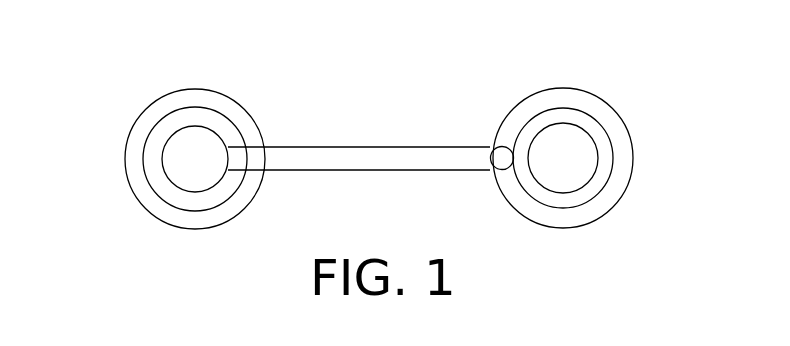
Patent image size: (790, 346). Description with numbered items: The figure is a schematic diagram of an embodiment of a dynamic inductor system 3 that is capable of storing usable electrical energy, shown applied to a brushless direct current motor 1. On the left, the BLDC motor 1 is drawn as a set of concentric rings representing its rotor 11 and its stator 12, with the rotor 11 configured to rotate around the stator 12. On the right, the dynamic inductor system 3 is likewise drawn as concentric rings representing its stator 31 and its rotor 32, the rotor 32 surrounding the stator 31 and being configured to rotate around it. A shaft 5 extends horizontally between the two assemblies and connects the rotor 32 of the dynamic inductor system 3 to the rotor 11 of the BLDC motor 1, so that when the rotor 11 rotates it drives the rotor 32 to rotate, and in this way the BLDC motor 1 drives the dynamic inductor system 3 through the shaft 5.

The brushless direct current (BLDC) motor 1 is at (126, 106).
The rotor 11 is at (175, 147).
The stator 12 is at (215, 107).
The shaft 5 is at (333, 155).
The dynamic inductor system 3 is at (604, 91).
The stator 31 is at (577, 177).
The rotor 32 is at (613, 128).